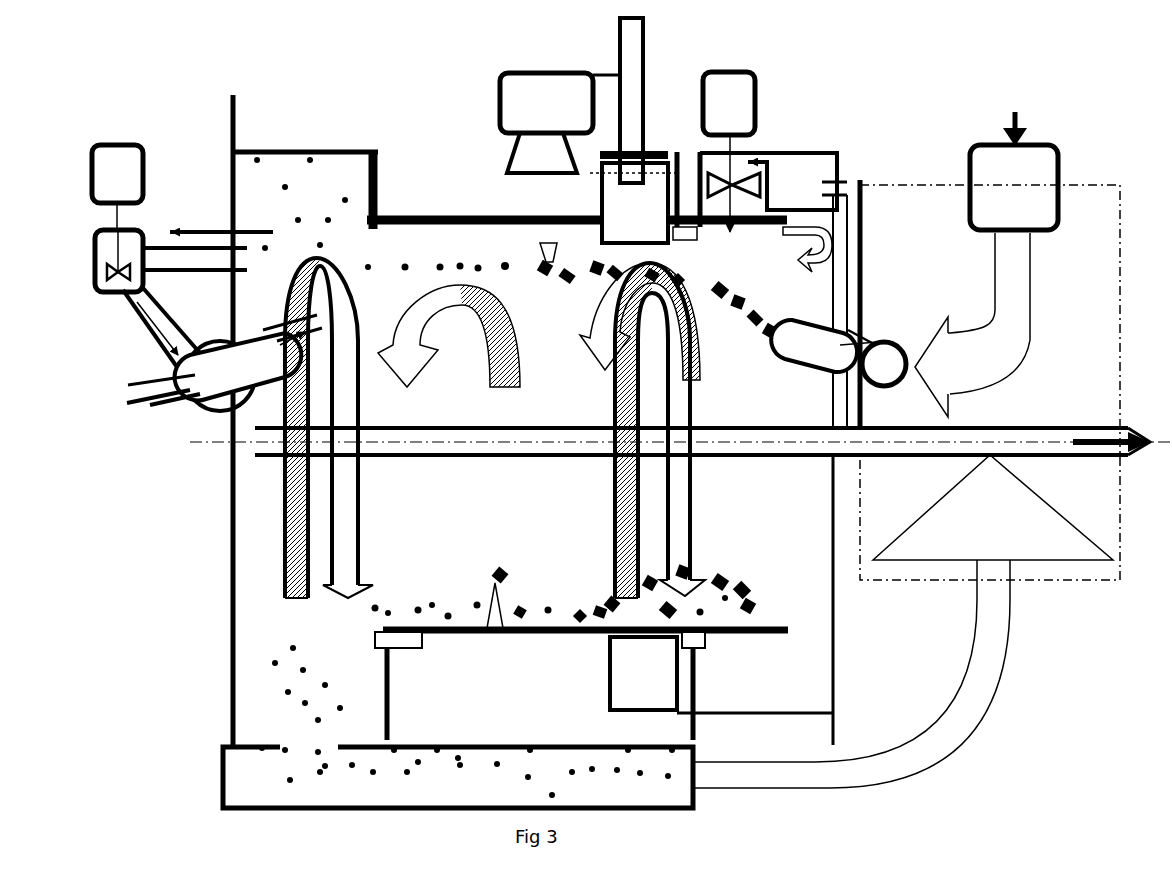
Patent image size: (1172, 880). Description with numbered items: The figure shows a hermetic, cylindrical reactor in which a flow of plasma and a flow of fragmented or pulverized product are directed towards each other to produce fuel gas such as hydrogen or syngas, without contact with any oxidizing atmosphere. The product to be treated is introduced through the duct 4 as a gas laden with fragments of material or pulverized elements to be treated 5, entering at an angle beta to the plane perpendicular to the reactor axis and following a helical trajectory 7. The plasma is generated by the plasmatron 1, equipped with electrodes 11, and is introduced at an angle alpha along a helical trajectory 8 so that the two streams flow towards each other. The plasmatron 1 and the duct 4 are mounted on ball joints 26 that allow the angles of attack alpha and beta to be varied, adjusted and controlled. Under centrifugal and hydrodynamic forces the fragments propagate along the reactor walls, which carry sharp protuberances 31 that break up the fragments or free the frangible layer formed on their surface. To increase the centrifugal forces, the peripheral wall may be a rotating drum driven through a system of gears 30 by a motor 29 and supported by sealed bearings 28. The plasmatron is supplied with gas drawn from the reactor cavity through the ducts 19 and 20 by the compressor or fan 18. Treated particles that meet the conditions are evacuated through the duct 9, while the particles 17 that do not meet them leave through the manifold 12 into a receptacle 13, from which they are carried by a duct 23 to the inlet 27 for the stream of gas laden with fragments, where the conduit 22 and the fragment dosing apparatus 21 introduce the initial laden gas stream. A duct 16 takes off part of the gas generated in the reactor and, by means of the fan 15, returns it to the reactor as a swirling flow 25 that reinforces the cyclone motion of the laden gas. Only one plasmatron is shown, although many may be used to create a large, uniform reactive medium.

The plasmatron 1 is at (205, 399).
The duct 4 is at (897, 342).
The fragments of material or pulverized elements to be treated 5 is at (503, 263).
The helical trajectory 7 is at (257, 402).
The helical trajectory 8 is at (275, 497).
The duct 9 is at (1059, 453).
The electrodes 11 is at (132, 384).
The manifold 12 is at (240, 151).
The receptacle 13 is at (220, 790).
The fan 15 is at (742, 93).
The duct 16 is at (861, 178).
The particles 17 is at (255, 725).
The compressor (or fan) 18 is at (103, 152).
The duct 19 is at (175, 231).
The duct 20 is at (128, 307).
The fragment dosing apparatus 21 is at (995, 146).
The conduit 22 is at (1024, 347).
The duct 23 is at (1002, 603).
The swirling flow 25 is at (800, 220).
The ball joints 26 is at (213, 404).
The inlet 27 is at (1065, 383).
The sealed bearings 28 is at (397, 214).
The motor 29 is at (538, 112).
The system of gears 30 is at (648, 65).
The protuberances 31 is at (483, 591).